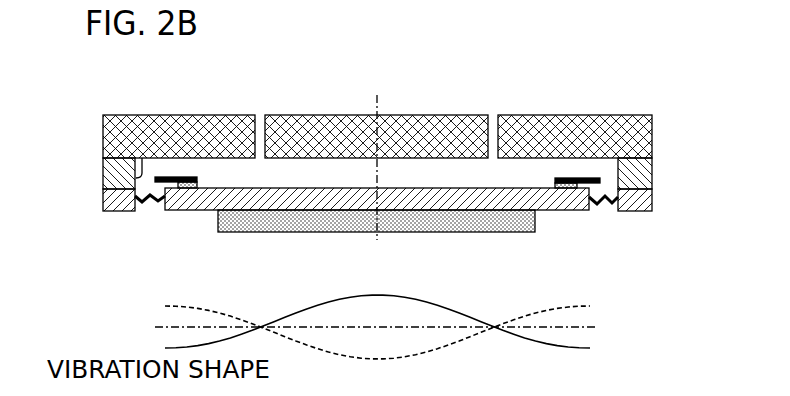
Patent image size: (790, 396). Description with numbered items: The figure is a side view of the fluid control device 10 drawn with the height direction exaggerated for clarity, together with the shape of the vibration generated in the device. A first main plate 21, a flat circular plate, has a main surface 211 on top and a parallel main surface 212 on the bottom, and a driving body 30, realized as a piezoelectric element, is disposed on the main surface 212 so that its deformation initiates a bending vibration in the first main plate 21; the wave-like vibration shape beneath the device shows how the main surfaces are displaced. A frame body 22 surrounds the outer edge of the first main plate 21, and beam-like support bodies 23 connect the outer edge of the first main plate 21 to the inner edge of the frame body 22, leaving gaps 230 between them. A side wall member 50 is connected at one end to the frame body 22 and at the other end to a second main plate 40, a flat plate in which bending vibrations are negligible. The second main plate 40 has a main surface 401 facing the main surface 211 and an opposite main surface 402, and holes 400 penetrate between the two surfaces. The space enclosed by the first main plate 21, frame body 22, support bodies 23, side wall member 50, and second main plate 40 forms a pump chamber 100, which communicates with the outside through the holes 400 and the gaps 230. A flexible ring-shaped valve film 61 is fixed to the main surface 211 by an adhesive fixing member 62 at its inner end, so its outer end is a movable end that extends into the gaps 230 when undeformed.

The fluid control device 10 is at (631, 90).
The second main plate 40 is at (647, 133).
The holes 400 is at (262, 115).
The main surface 401 is at (125, 180).
The main surface 402 is at (148, 115).
The pump chamber 100 is at (342, 170).
The side wall member 50 is at (648, 170).
The frame body 22 is at (648, 200).
The first main plate 21 is at (408, 200).
The driving body 30 is at (446, 222).
The main surface 211 is at (238, 190).
The main surface 212 is at (233, 215).
The valve film 61 is at (589, 178).
The fixing member 62 is at (566, 190).
The gaps 230 is at (602, 208).
The support bodies 23 is at (609, 203).